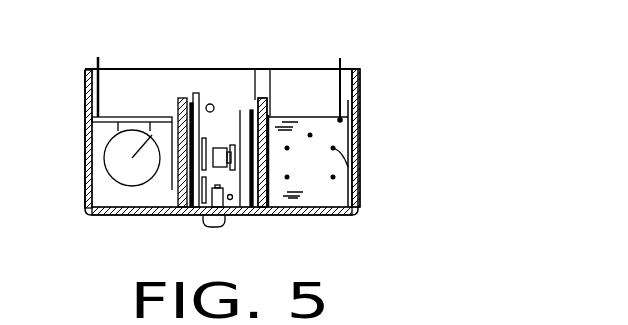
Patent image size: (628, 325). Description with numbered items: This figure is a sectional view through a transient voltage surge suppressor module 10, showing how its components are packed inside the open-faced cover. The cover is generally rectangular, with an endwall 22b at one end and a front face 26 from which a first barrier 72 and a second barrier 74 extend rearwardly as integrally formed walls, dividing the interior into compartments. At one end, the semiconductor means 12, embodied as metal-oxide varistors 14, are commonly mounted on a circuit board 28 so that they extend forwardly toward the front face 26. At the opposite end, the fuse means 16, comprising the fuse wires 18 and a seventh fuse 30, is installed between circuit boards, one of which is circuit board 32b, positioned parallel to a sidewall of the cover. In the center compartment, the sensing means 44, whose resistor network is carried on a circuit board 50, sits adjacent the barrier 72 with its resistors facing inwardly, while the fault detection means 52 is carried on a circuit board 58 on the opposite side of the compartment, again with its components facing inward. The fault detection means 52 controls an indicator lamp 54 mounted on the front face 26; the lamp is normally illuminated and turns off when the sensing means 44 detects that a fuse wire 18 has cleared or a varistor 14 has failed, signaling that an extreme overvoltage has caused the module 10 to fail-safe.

The transient voltage surge suppressor module 10 is at (403, 112).
The semiconductor means 12 is at (74, 136).
The metal-oxide varistors 14 is at (130, 187).
The fuse means 16 is at (372, 151).
The fuse wires 18 is at (333, 177).
The endwall 22b is at (356, 82).
The front face 26 is at (259, 215).
The circuit board 28 is at (117, 117).
The seventh fuse 30 is at (310, 162).
The circuit board 32b is at (303, 115).
The sensing means 44 is at (215, 88).
The circuit board 50 is at (197, 93).
The fault detection means 52 is at (283, 44).
The indicator lamp 54 is at (219, 227).
The circuit board 58 is at (240, 110).
The first barrier 72 is at (184, 98).
The second barrier 74 is at (267, 100).